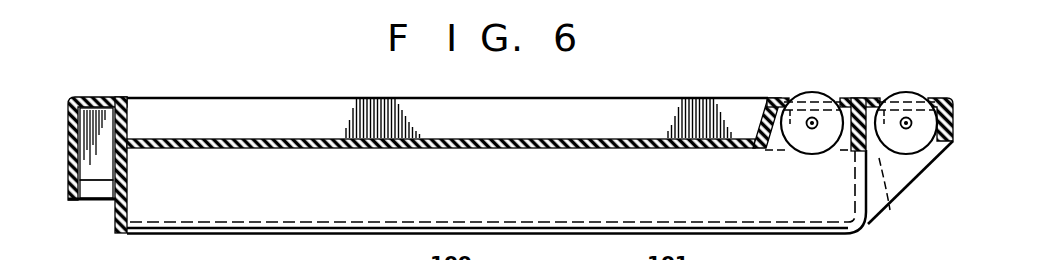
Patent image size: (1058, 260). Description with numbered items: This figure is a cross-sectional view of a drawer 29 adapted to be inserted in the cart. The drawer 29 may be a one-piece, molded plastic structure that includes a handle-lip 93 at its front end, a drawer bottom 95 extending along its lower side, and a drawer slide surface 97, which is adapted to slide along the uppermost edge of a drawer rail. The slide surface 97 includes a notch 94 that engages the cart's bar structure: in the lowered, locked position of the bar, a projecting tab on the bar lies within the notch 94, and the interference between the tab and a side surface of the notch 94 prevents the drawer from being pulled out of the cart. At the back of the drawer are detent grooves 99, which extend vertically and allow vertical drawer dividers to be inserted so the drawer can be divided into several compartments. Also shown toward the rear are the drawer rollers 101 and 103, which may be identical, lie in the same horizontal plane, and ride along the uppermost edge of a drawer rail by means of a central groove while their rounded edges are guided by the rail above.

The drawer 29 is at (280, 86).
The handle-lip 93 is at (80, 200).
The notch 94 is at (201, 148).
The drawer bottom 95 is at (253, 231).
The drawer slide surface 97 is at (411, 149).
The detent grooves 99 is at (879, 208).
The drawer roller 101 is at (815, 93).
The drawer roller 103 is at (907, 103).